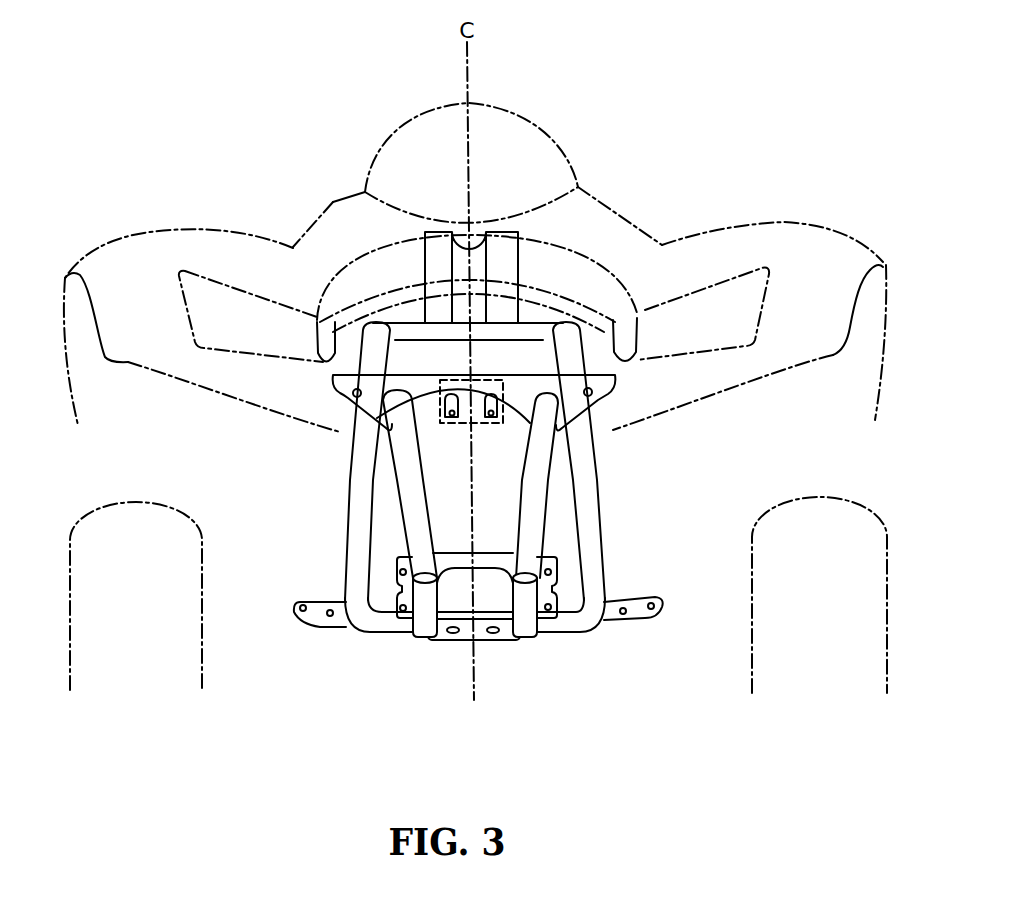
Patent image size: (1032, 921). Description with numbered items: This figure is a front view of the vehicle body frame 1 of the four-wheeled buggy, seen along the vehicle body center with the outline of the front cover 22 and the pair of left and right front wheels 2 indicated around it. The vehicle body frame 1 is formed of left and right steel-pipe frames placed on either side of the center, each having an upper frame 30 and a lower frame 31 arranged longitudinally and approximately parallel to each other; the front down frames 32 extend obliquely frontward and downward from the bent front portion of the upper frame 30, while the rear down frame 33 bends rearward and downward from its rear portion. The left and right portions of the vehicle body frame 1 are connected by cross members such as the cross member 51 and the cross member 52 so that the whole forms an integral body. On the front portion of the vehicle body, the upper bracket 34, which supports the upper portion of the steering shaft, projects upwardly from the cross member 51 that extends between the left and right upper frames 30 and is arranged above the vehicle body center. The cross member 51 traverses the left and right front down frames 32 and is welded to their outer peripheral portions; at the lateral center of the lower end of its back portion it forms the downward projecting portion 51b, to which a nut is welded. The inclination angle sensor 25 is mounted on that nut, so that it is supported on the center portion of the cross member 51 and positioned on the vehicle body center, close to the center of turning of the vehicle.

The vehicle body frame 1 is at (465, 479).
The front wheels 2 is at (203, 616).
The front cover 22 is at (340, 208).
The inclination angle sensor 25 is at (475, 380).
The upper frame 30 is at (578, 326).
The lower frame 31 is at (566, 634).
The front down frames 32 is at (530, 510).
The rear down frame 33 is at (597, 463).
The upper bracket 34 is at (513, 245).
The cross member 51 is at (349, 433).
The downward projecting portion 51b is at (500, 423).
The cross member 52 is at (540, 323).